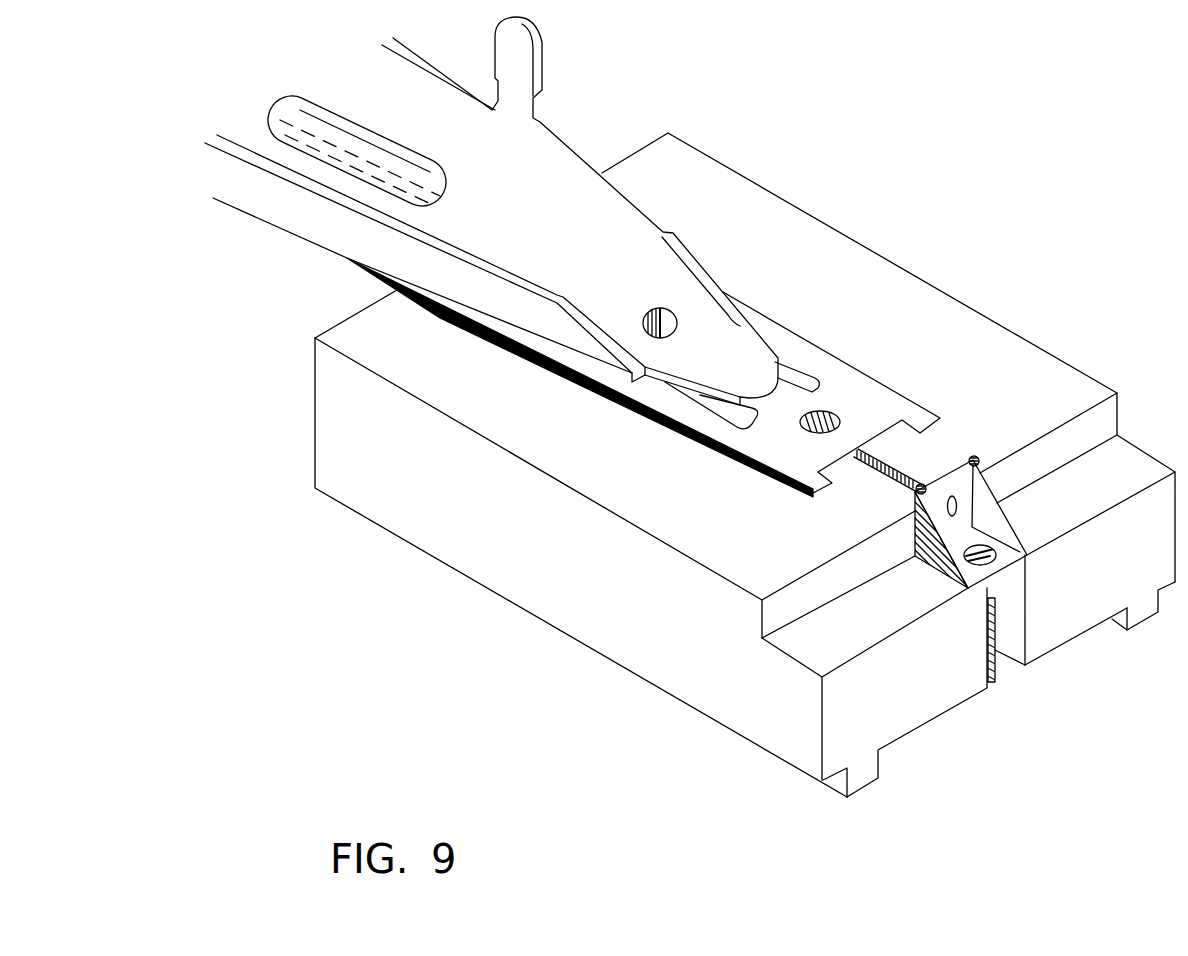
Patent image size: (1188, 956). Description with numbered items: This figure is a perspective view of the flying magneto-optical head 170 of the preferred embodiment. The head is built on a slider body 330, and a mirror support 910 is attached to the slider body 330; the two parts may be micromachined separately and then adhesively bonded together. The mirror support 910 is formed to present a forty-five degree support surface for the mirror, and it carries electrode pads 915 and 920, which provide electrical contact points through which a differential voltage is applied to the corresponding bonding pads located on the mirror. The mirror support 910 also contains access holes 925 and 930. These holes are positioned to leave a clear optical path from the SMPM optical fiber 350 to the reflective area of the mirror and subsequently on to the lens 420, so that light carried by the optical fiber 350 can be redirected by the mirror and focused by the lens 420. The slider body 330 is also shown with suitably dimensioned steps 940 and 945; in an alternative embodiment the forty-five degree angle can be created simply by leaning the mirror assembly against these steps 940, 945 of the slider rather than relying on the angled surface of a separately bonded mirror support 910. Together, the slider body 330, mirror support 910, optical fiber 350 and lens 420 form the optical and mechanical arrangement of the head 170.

The flying magneto-optical head 170 is at (1180, 124).
The slider body 330 is at (867, 245).
The SMPM optical fiber 350 is at (879, 474).
The lens 420 is at (995, 650).
The mirror support 910 is at (928, 550).
The electrode pad 915 is at (918, 482).
The electrode pad 920 is at (975, 457).
The access hole 925 is at (957, 506).
The access hole 930 is at (997, 553).
The step 940 is at (867, 653).
The step 945 is at (819, 549).